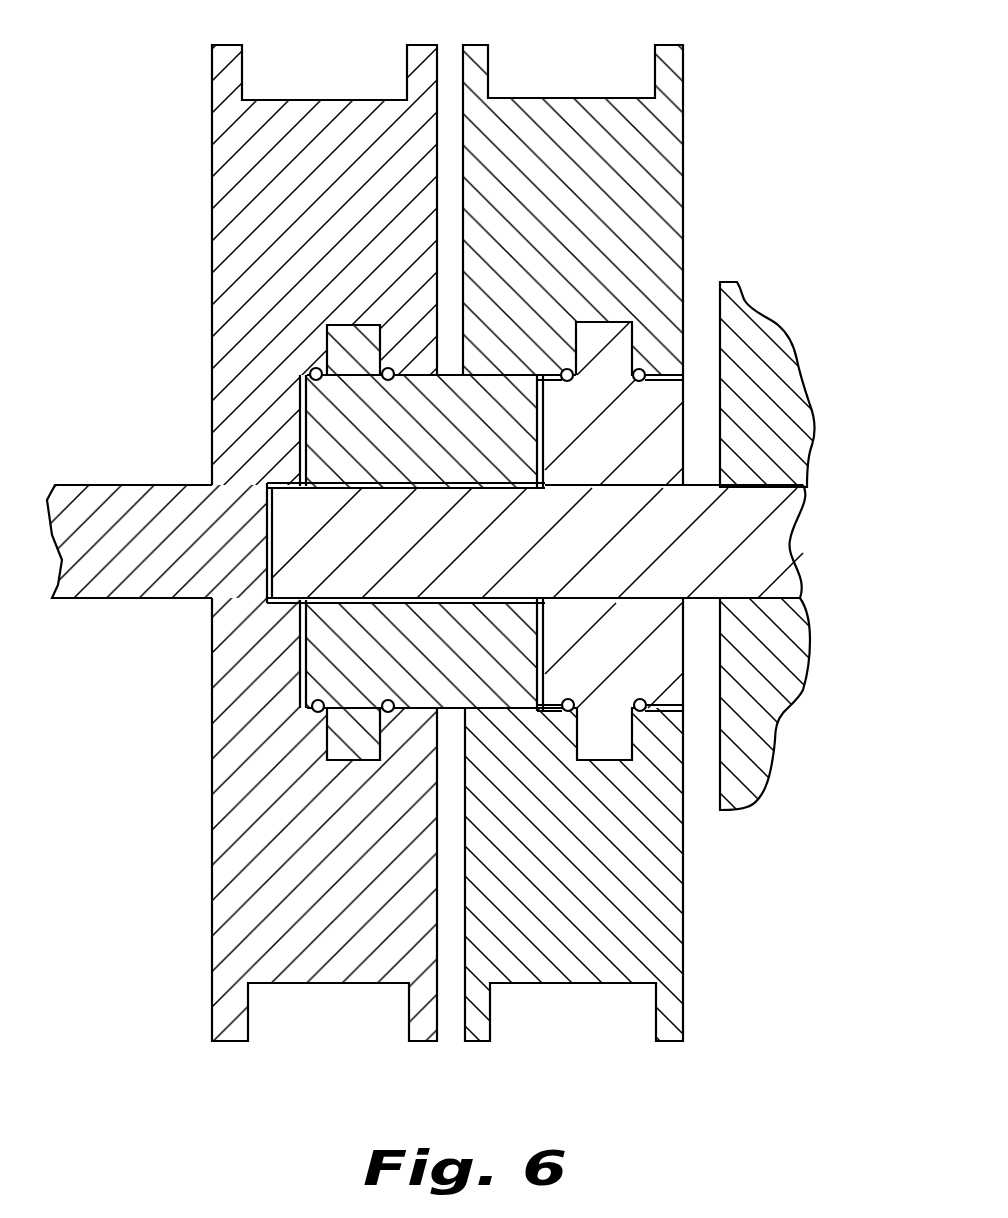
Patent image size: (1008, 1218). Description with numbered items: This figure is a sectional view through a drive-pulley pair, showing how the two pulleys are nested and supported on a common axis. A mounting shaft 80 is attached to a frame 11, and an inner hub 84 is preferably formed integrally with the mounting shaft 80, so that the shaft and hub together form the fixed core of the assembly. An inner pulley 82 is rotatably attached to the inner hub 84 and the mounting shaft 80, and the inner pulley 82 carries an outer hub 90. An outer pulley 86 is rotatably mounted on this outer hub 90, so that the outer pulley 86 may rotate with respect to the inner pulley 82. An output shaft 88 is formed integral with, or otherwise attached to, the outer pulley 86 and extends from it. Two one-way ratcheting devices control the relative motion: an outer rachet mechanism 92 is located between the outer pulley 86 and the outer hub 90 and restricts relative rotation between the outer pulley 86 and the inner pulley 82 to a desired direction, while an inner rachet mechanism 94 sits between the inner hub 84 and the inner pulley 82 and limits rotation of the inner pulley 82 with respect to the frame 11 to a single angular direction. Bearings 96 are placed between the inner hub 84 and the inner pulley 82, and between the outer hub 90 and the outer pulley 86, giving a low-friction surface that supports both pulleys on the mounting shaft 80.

The frame 11 is at (802, 346).
The mounting shaft 80 is at (770, 538).
The inner pulley 82 is at (711, 146).
The inner hub 84 is at (622, 553).
The outer pulley 86 is at (181, 154).
The output shaft 88 is at (124, 483).
The outer hub 90 is at (327, 350).
The outer rachet mechanism 92 is at (352, 762).
The inner rachet mechanism 94 is at (636, 748).
The bearings 96 is at (312, 370).